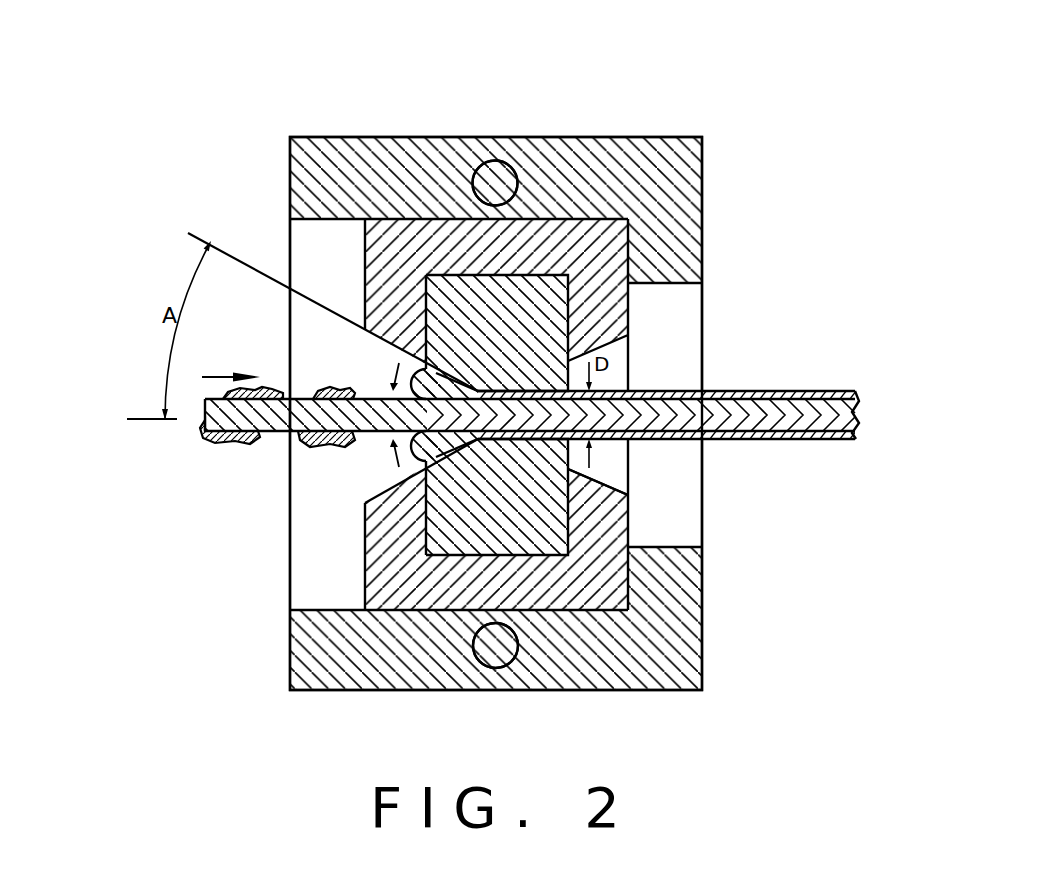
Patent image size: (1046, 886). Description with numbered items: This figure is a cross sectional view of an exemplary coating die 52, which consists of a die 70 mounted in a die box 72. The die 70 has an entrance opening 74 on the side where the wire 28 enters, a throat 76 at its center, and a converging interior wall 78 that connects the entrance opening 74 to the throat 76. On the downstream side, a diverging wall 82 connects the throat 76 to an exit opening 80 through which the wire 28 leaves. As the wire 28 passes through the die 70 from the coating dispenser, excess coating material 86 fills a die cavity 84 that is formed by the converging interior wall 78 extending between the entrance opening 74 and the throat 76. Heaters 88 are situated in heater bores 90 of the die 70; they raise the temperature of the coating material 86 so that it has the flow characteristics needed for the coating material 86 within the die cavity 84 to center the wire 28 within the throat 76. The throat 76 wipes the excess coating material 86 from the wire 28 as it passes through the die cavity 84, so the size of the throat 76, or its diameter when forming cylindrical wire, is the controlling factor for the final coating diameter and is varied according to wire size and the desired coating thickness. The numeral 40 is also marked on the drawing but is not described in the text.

The coating die 52 is at (593, 55).
The heaters 88 is at (484, 160).
The heater bores 90 is at (478, 186).
The die 70 is at (567, 243).
The die box 72 is at (660, 157).
The coating material 86 is at (422, 366).
The die cavity 84 is at (380, 362).
The throat 76 is at (572, 358).
The exit opening 80 is at (628, 353).
The wire 28 is at (777, 390).
The entrance opening 74 is at (363, 452).
The converging interior wall 78 is at (425, 465).
The diverging wall 82 is at (628, 486).
The fastener 40 is at (520, 645).